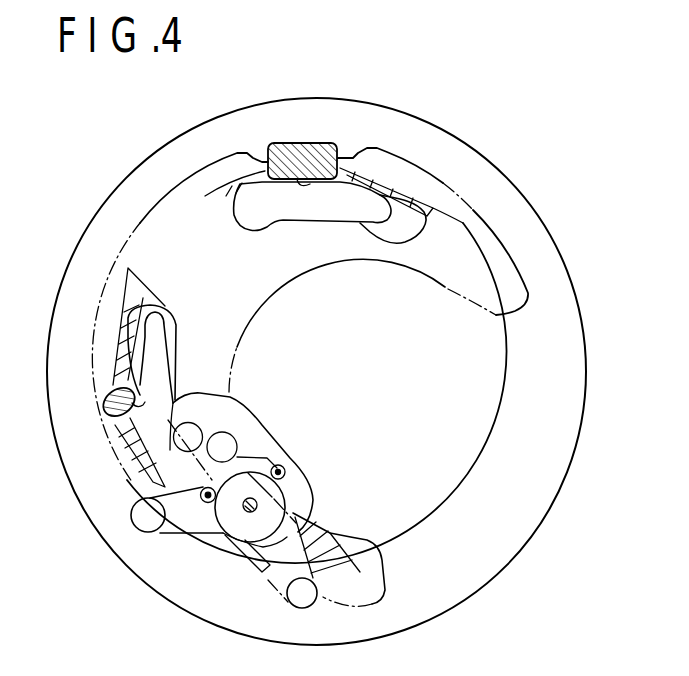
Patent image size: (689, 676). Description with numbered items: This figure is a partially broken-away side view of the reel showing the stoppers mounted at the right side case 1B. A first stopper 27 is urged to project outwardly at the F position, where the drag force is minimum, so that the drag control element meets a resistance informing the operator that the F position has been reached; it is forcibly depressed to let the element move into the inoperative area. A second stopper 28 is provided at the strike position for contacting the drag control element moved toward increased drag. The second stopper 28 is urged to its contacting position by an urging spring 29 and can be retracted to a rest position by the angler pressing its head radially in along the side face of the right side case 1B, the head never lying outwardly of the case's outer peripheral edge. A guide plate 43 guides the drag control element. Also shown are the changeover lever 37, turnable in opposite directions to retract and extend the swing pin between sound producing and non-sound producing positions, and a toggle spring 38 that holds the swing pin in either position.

The right side case 1B is at (528, 200).
The first stopper 27 is at (116, 424).
The second stopper 28 is at (282, 182).
The urging spring 29 is at (373, 223).
The changeover lever 37 is at (175, 523).
The toggle spring 38 is at (221, 388).
The guide plate 43 is at (445, 289).